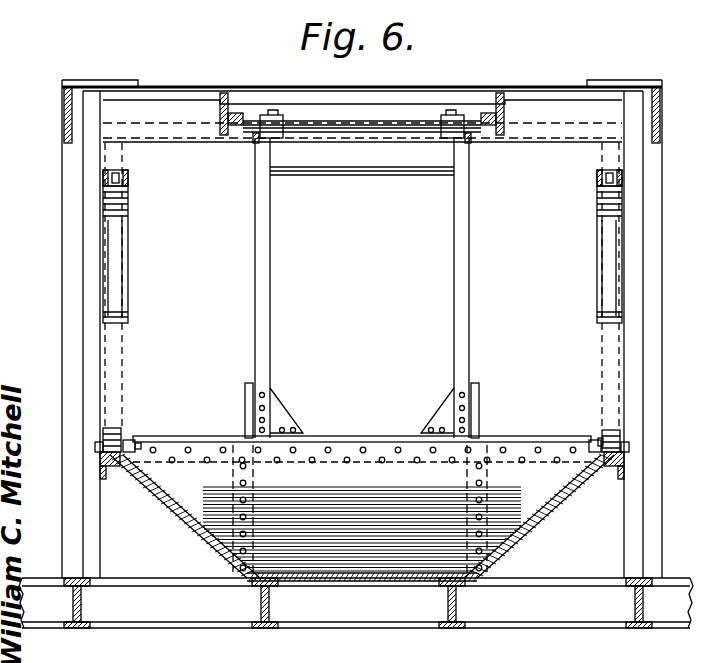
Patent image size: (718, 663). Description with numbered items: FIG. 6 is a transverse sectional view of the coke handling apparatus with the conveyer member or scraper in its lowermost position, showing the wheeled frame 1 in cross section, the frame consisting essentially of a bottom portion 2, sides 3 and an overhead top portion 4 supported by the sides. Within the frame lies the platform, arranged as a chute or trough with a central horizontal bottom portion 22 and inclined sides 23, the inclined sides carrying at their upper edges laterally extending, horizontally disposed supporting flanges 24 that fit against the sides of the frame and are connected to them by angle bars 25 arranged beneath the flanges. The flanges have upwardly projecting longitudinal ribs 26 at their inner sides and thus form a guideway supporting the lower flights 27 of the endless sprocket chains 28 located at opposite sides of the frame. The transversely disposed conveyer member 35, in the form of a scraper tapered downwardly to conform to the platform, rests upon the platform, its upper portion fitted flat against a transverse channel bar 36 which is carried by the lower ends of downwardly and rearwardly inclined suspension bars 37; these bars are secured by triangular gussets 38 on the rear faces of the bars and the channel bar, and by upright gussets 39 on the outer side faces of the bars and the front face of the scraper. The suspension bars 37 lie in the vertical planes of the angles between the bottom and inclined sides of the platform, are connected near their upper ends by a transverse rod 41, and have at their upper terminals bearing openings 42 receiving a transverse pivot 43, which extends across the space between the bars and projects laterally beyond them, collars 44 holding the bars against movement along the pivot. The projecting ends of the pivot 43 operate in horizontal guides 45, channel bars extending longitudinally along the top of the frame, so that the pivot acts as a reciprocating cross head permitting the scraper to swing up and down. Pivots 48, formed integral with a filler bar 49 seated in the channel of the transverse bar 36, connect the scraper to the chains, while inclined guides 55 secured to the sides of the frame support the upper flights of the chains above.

The wheeled frame 1 is at (172, 385).
The bottom portion 2 is at (192, 616).
The sides 3 is at (355, 329).
The overhead top portion 4 is at (362, 102).
The central horizontal bottom portion 22 is at (356, 588).
The inclined sides 23 is at (510, 537).
The supporting flanges 24 is at (624, 458).
The angle bars 25 is at (620, 473).
The longitudinal ribs 26 is at (600, 440).
The lower flights 27 is at (624, 450).
The endless sprocket chains 28 is at (618, 432).
The conveyer member 35 is at (360, 508).
The channel bar 36 is at (340, 436).
The suspension bars 37 is at (470, 239).
The gussets 38 is at (443, 418).
The gussets 39 is at (475, 380).
The transverse rod 41 is at (372, 174).
The bearing openings 42 is at (470, 142).
The transverse pivot 43 is at (347, 127).
The collars 44 is at (457, 113).
The horizontal guides 45 is at (500, 136).
The pivots 48 is at (601, 436).
The filler bar 49 is at (358, 462).
The inclined guides 55 is at (603, 236).